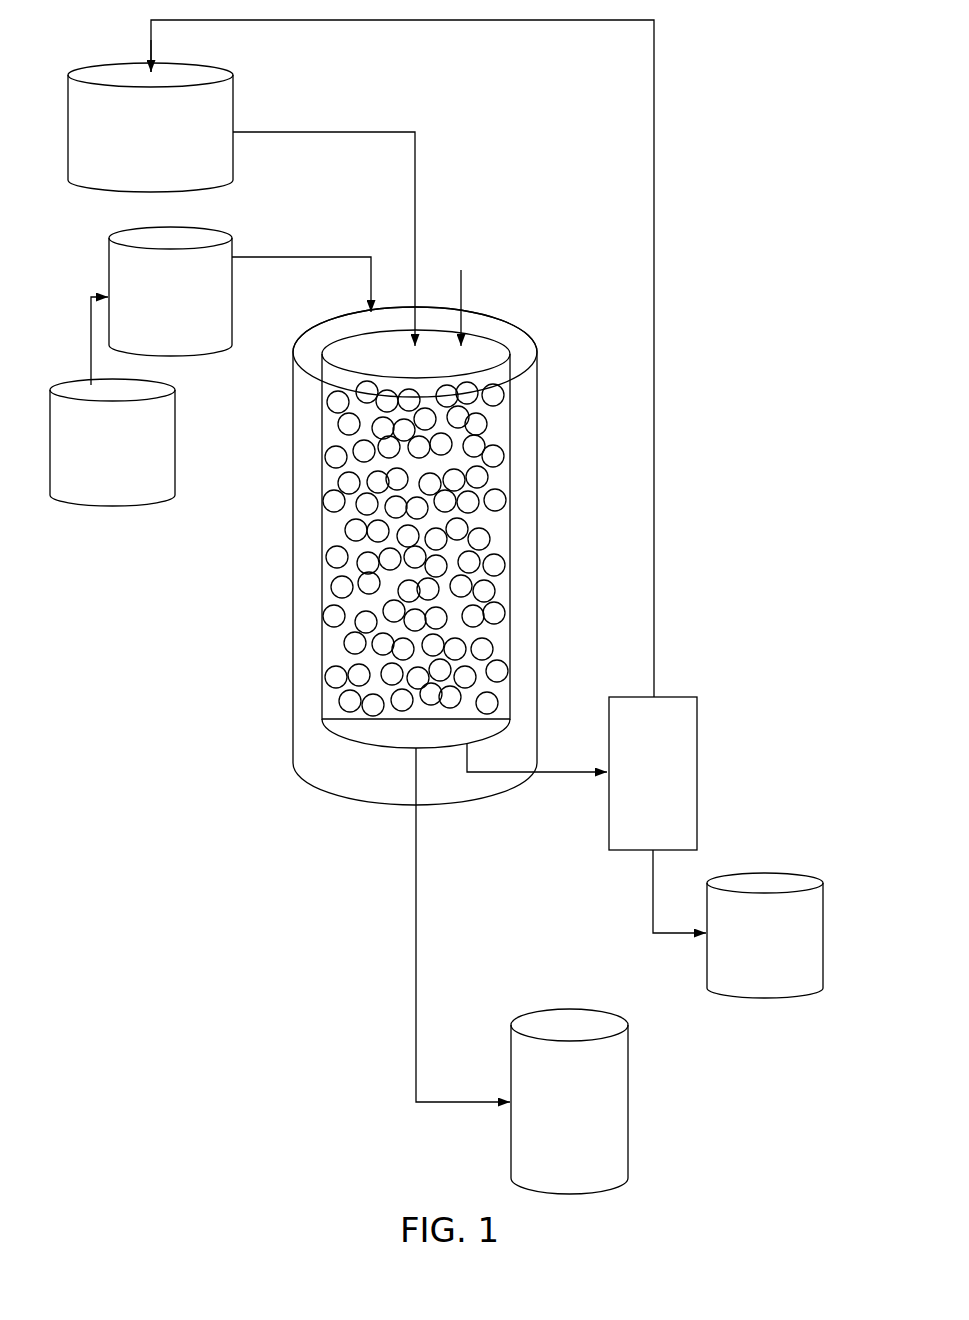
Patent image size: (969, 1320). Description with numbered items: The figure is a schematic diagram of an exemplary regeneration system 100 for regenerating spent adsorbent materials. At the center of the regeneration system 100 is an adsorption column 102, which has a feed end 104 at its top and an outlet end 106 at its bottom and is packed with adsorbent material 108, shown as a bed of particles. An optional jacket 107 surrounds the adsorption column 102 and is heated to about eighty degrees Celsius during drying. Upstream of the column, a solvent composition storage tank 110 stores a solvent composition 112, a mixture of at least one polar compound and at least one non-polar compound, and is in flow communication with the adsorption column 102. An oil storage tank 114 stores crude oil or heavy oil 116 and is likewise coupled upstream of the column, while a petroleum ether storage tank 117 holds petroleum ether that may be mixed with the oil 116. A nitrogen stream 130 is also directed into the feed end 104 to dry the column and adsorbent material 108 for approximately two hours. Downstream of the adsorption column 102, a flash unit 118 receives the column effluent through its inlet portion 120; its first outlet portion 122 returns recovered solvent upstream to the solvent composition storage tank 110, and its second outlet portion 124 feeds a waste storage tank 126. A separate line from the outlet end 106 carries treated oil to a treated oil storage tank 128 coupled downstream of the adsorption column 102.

The regeneration system 100 is at (739, 51).
The adsorption column 102 is at (512, 449).
The feed end 104 is at (427, 342).
The outlet end 106 is at (379, 763).
The jacket 107 is at (451, 336).
The adsorbent material 108 is at (506, 532).
The solvent composition storage tank 110 is at (233, 152).
The solvent composition 112 is at (121, 77).
The oil storage tank 114 is at (232, 332).
The crude oil or heavy oil 116 is at (132, 243).
The petroleum ether storage tank 117 is at (175, 475).
The flash unit 118 is at (697, 782).
The inlet portion 120 is at (602, 764).
The first outlet portion 122 is at (661, 690).
The second outlet portion 124 is at (661, 856).
The waste storage tank 126 is at (823, 913).
The treated oil storage tank 128 is at (628, 1093).
The nitrogen stream 130 is at (462, 298).